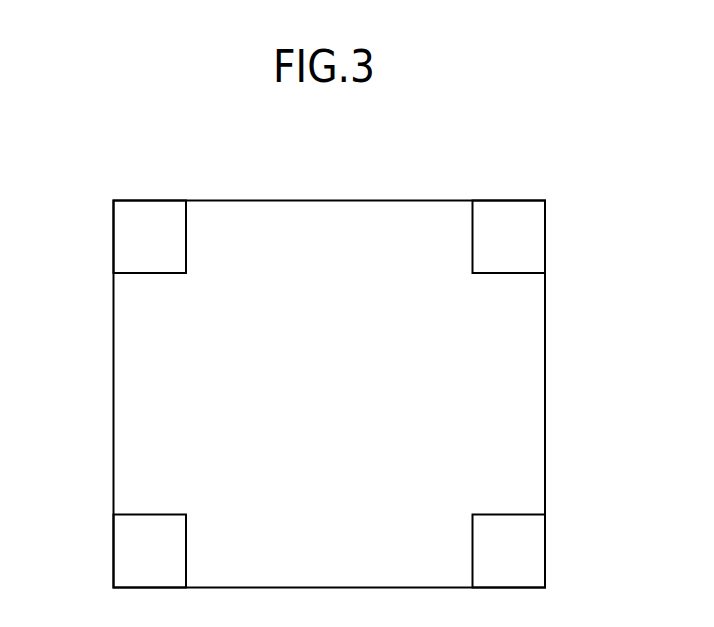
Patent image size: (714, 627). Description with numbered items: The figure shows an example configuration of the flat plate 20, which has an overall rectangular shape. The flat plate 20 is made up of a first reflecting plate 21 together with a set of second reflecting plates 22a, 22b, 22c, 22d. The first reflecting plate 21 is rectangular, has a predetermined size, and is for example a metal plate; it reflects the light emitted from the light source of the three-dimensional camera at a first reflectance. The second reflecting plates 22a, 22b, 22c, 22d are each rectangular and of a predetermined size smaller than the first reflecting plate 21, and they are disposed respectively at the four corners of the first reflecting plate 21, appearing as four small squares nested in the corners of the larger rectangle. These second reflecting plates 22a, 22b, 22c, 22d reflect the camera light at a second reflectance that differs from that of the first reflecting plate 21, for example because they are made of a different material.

The flat plate 20 is at (342, 184).
The first reflecting plate 21 is at (546, 374).
The second reflecting plate 22a is at (112, 237).
The second reflecting plate 22b is at (112, 553).
The second reflecting plate 22c is at (546, 237).
The second reflecting plate 22d is at (546, 553).